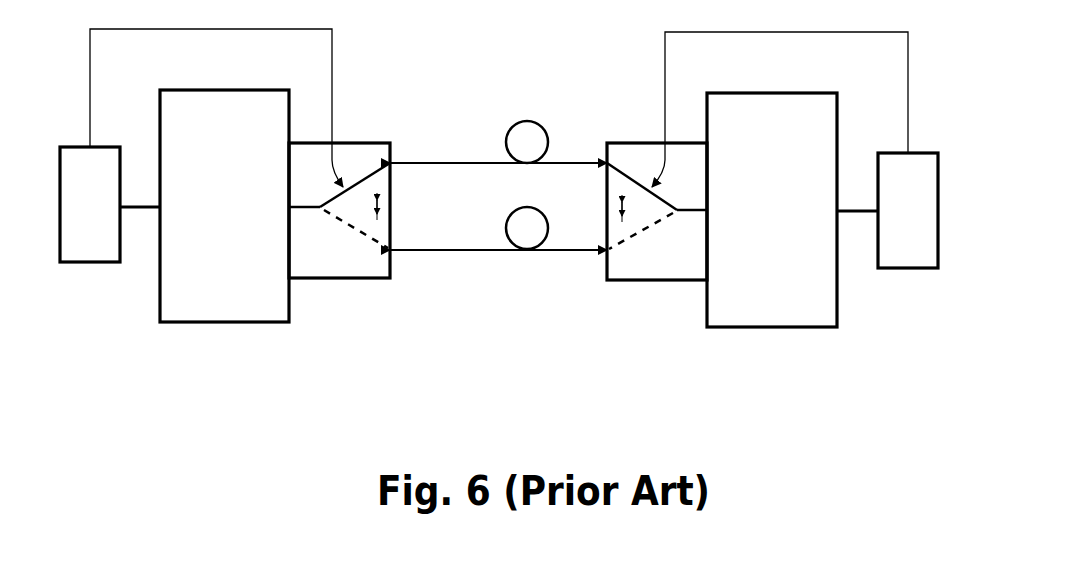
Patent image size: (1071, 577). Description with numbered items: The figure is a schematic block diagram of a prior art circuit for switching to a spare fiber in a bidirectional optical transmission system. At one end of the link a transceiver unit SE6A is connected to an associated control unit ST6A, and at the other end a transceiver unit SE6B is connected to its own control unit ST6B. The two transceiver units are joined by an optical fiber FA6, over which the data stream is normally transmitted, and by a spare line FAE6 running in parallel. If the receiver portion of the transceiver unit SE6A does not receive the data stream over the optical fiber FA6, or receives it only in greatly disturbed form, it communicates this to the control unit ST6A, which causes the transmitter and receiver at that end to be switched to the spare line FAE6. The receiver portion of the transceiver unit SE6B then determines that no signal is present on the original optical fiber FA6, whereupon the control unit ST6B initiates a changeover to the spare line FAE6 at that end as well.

The control unit ST6A is at (112, 260).
The transceiver unit SE6A is at (240, 201).
The control unit ST6B is at (908, 239).
The transceiver unit SE6B is at (757, 206).
The optical fiber FA6 is at (498, 128).
The spare line FAE6 is at (498, 263).